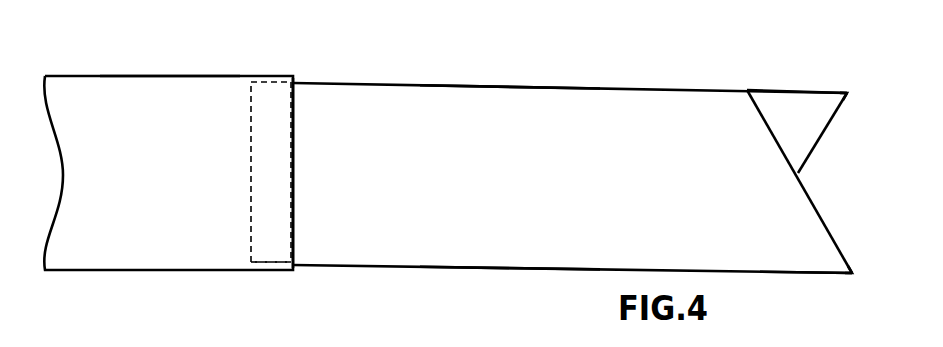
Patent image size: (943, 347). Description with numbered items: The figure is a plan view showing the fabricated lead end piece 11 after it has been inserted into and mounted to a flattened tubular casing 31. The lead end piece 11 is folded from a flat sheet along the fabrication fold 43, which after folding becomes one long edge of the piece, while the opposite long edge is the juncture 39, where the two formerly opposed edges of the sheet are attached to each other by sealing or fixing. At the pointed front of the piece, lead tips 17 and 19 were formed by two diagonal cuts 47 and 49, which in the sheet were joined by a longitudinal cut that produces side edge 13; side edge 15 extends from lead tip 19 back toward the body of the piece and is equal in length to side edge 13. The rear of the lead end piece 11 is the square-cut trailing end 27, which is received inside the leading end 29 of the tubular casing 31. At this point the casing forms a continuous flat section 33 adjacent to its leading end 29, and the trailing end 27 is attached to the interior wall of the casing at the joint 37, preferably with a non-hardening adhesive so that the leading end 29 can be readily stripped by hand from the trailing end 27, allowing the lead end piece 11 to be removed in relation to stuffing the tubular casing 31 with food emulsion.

The lead end piece 11 is at (442, 97).
The side edge 13 is at (782, 88).
The side edge 15 is at (800, 275).
The lead tip 17 is at (845, 93).
The lead tip 19 is at (853, 270).
The trailing end 27 is at (249, 102).
The leading end 29 is at (297, 110).
The tubular casing 31 is at (80, 72).
The flat section 33 is at (123, 88).
The joint 37 is at (277, 242).
The juncture 39 is at (550, 270).
The fabrication fold 43 is at (550, 83).
The diagonal cut 47 is at (822, 132).
The diagonal cut 49 is at (812, 198).